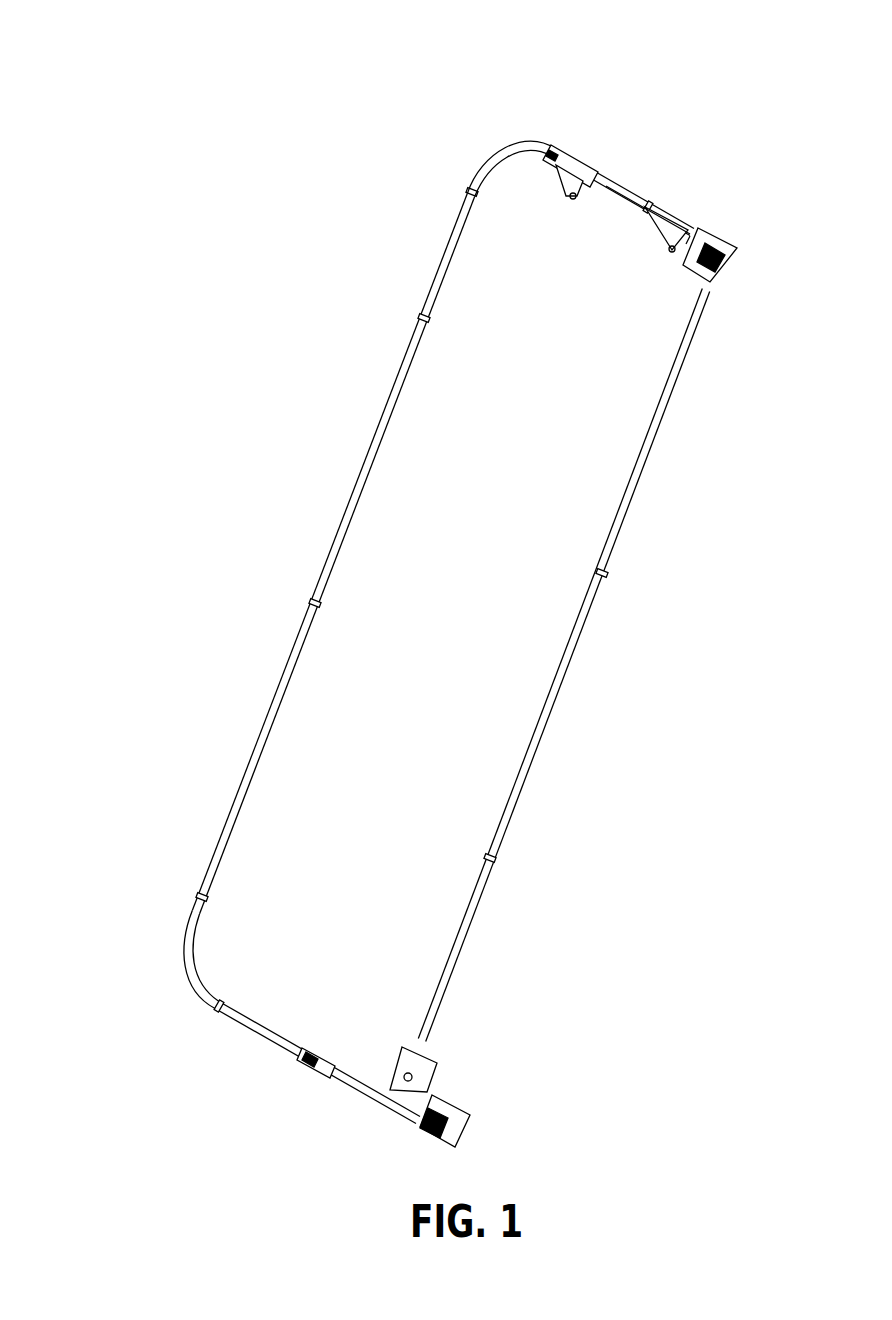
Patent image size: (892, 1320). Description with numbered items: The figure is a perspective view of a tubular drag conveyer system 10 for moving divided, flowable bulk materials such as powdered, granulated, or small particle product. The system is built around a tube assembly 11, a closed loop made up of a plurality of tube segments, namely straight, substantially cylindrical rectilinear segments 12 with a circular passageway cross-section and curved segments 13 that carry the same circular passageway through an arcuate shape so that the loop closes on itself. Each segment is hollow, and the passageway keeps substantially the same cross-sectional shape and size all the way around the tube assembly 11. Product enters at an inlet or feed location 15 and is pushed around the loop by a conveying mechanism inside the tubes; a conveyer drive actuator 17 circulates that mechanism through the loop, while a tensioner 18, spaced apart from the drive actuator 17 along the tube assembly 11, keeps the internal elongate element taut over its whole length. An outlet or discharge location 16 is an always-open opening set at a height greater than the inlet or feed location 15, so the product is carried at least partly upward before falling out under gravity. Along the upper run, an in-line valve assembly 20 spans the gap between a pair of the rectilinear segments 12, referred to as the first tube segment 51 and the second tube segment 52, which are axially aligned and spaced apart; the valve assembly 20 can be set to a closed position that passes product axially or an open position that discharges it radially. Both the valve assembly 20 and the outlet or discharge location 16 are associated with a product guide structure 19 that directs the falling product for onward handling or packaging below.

The tubular drag conveyer system 10 is at (213, 176).
The tube assembly 11 is at (280, 670).
The rectilinear segments 12 is at (345, 520).
The curved segments 13 is at (512, 136).
The inlet or feed location 15 is at (322, 1050).
The outlet or discharge location 16 is at (677, 213).
The conveyer drive actuator 17 is at (730, 233).
The tensioner 18 is at (460, 1097).
The product guide structure 19 is at (571, 193).
The in-line valve assembly 20 is at (585, 138).
The first tube segment 51 is at (552, 143).
The second tube segment 52 is at (614, 180).